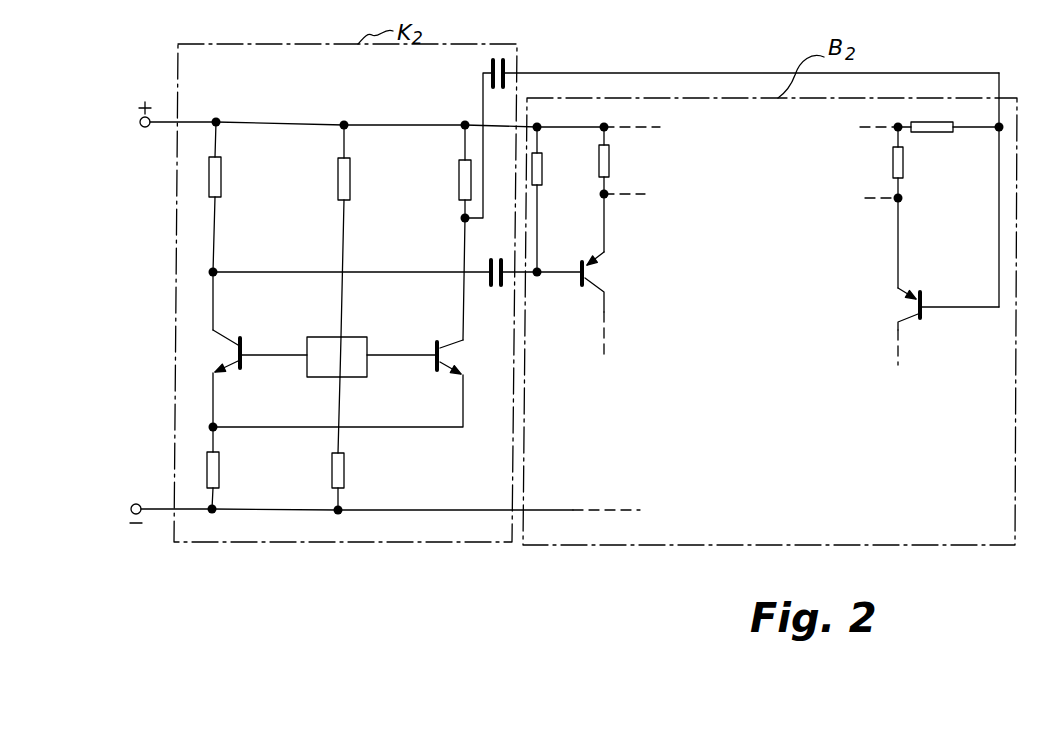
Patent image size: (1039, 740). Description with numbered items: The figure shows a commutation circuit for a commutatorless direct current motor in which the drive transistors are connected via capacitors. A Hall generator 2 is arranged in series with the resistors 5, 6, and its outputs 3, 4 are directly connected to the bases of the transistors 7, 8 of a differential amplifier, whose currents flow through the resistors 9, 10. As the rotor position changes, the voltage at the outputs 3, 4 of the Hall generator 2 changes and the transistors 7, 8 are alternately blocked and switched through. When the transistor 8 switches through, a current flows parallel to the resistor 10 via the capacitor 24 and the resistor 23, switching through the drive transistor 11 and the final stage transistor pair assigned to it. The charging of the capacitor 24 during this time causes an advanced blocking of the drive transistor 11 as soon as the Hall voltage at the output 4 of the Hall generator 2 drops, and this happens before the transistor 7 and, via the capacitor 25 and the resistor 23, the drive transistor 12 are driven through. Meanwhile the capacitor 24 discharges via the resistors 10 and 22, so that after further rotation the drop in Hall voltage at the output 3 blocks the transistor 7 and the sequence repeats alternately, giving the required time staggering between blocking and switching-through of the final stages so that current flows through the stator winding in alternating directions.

The Hall generator 2 is at (325, 344).
The Hall generator output 3 is at (282, 359).
The Hall generator output 4 is at (394, 359).
The resistor 5 is at (351, 179).
The resistor 6 is at (346, 470).
The transistor 7 is at (235, 357).
The transistor 8 is at (441, 362).
The resistor 9 is at (222, 177).
The resistor 10 is at (451, 180).
The drive transistor 11 is at (948, 324).
The drive transistor 12 is at (591, 303).
The resistor 22 is at (932, 140).
The resistor 23 is at (549, 199).
The capacitor 24 is at (481, 73).
The capacitor 25 is at (495, 286).